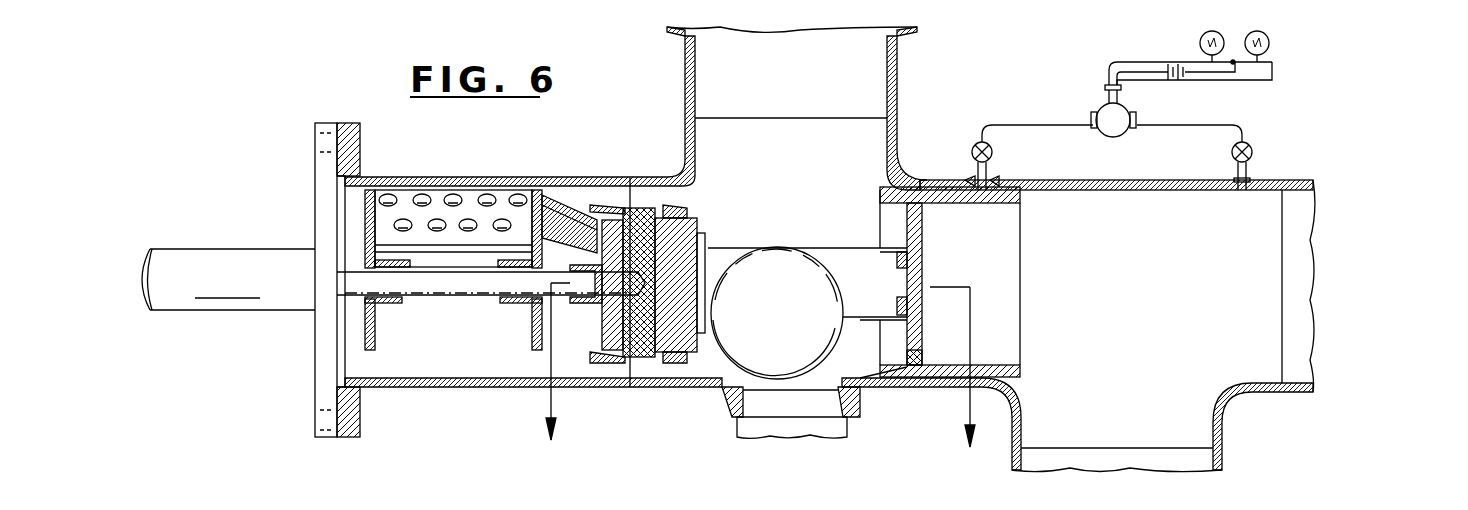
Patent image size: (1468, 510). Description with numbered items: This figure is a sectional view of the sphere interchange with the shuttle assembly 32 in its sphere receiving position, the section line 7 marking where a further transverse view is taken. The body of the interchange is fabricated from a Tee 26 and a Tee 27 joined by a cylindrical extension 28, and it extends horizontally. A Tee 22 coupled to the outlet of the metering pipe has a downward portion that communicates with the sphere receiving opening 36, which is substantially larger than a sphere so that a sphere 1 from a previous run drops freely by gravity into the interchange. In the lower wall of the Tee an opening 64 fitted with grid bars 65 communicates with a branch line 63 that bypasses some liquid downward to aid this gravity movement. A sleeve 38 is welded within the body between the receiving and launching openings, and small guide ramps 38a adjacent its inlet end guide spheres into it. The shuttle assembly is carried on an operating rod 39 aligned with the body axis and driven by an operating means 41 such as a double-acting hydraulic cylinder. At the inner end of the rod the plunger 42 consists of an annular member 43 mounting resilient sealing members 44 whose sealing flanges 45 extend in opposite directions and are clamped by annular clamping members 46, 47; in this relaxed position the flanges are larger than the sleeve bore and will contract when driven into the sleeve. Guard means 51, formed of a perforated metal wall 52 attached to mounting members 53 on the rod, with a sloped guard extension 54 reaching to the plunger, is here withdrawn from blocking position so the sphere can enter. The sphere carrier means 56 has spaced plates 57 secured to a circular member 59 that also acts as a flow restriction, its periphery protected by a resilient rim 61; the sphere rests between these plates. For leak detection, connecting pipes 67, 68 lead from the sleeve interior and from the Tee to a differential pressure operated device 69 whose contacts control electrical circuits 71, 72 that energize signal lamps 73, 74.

The sphere 1 is at (758, 275).
The section line 7 is at (761, 379).
The Tee 22 is at (865, 98).
The Tee 26 is at (897, 173).
The Tee 27 is at (1228, 395).
The extension 28 is at (398, 177).
The shuttle assembly 32 is at (615, 203).
The sphere receiving opening 36 is at (860, 155).
The sleeve 38 is at (1020, 186).
The guide ramps 38a is at (870, 360).
The operating rod 39 is at (473, 284).
The operating means 41 is at (218, 244).
The plunger 42 is at (700, 225).
The annular member 43 is at (632, 362).
The sealing members 44 is at (628, 353).
The resilient sealing flanges 45 is at (675, 210).
The annular clamping member 46 is at (608, 313).
The annular clamping member 47 is at (688, 330).
The guard means 51 is at (452, 258).
The perforated metal wall 52 is at (438, 197).
The mounting members 53 is at (545, 254).
The sloped guard extension 54 is at (567, 205).
The sphere carrier means 56 is at (856, 268).
The plates 57 is at (880, 287).
The member 59 is at (923, 240).
The rim 61 is at (924, 358).
The branch line 63 is at (828, 428).
The opening 64 is at (825, 408).
The grid bars 65 is at (812, 388).
The connecting pipe 67 is at (995, 163).
The connecting pipe 68 is at (1250, 165).
The differential pressure operated device 69 is at (1122, 138).
The electrical circuit 71 is at (1162, 62).
The electrical circuit 72 is at (1210, 80).
The signal lamp 73 is at (1208, 30).
The signal lamp 74 is at (1268, 30).